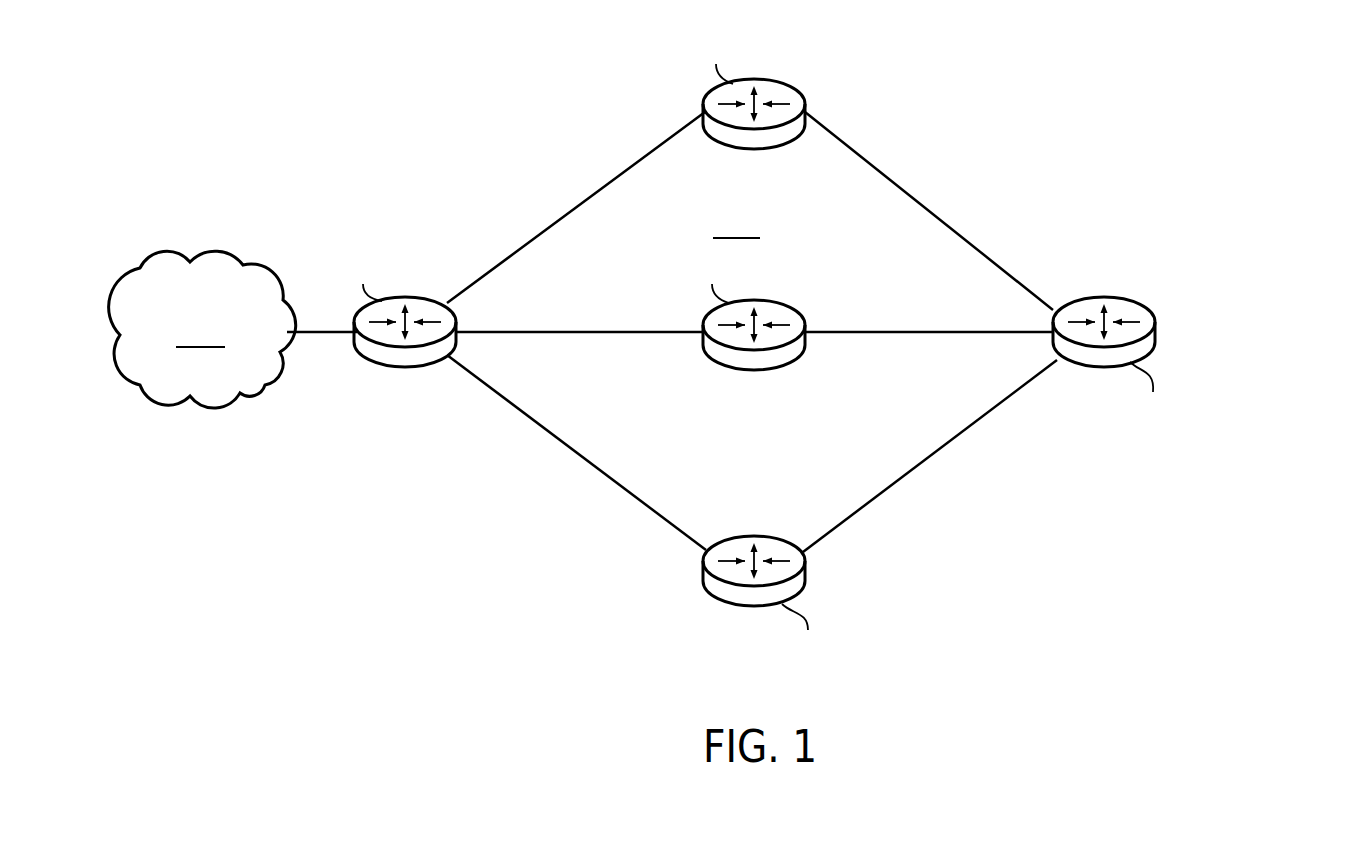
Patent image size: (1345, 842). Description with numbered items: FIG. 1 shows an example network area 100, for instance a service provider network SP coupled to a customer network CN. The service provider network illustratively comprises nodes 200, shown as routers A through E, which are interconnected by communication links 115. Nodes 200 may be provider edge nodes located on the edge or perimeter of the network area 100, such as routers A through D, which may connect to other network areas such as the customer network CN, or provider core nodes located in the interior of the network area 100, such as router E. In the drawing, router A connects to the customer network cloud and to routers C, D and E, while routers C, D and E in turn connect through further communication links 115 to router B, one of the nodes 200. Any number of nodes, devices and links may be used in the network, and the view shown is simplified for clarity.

The network area 100 is at (485, 105).
The communication links 115 is at (922, 195).
The node 200 is at (1107, 293).